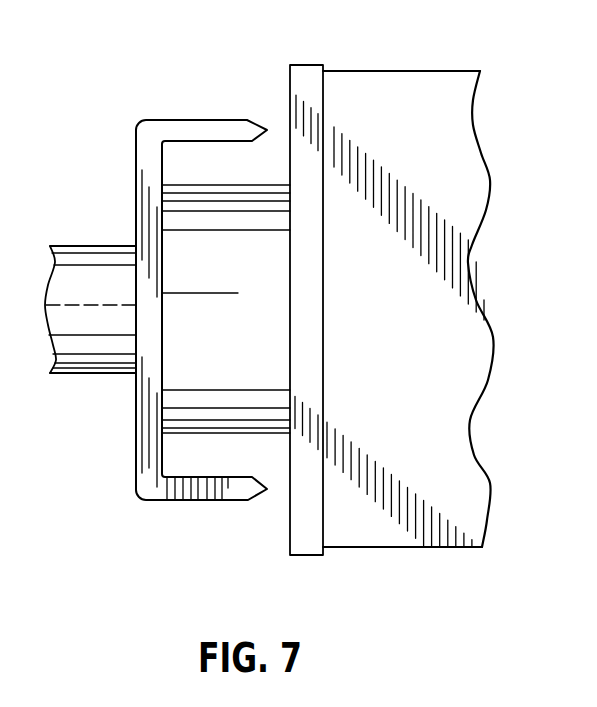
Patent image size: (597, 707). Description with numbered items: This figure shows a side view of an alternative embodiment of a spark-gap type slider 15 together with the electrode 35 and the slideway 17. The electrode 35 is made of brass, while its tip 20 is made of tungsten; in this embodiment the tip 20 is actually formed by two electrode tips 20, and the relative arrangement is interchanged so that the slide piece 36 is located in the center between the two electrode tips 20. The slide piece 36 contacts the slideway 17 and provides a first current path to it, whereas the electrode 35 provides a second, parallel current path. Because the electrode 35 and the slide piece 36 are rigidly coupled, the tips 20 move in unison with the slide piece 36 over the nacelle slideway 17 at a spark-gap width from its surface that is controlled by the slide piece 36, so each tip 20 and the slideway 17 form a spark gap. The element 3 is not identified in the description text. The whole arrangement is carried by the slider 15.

The body panel 3 is at (484, 183).
The slider 15 is at (74, 550).
The slideway 17 is at (310, 72).
The electrode tip 20 is at (212, 128).
The electrode 35 is at (88, 273).
The slide piece 36 is at (175, 370).